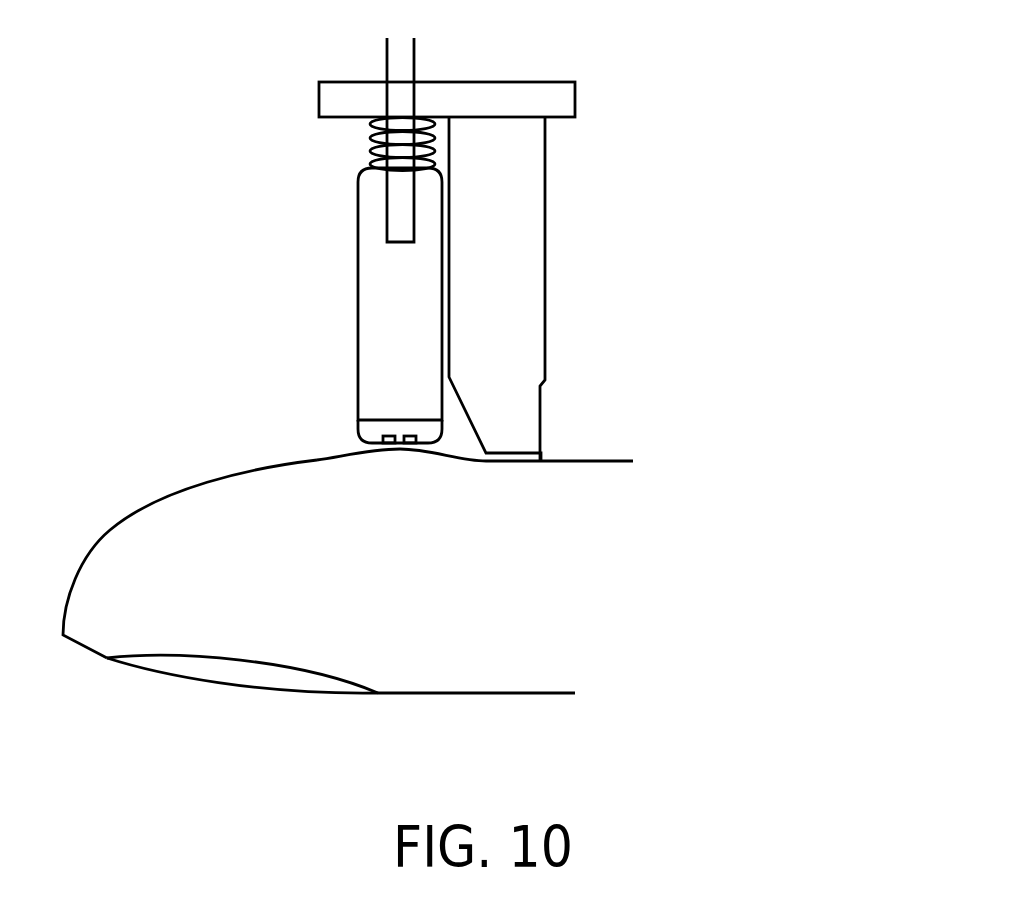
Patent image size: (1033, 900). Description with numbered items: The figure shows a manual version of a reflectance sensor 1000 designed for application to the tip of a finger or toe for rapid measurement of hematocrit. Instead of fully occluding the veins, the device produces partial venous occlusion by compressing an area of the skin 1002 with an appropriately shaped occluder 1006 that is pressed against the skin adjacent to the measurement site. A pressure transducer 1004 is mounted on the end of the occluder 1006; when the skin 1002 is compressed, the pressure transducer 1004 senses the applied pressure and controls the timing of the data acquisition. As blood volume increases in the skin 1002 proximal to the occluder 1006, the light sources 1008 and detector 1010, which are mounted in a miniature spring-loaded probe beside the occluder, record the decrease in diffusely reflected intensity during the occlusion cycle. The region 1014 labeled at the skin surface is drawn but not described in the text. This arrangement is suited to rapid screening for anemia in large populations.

The reflectance sensor 1000 is at (730, 115).
The skin 1002 is at (536, 490).
The pressure transducer 1004 is at (541, 453).
The occluder 1006 is at (516, 297).
The light sources 1008 is at (367, 437).
The detector 1010 is at (329, 370).
The skin bump 1014 is at (333, 455).